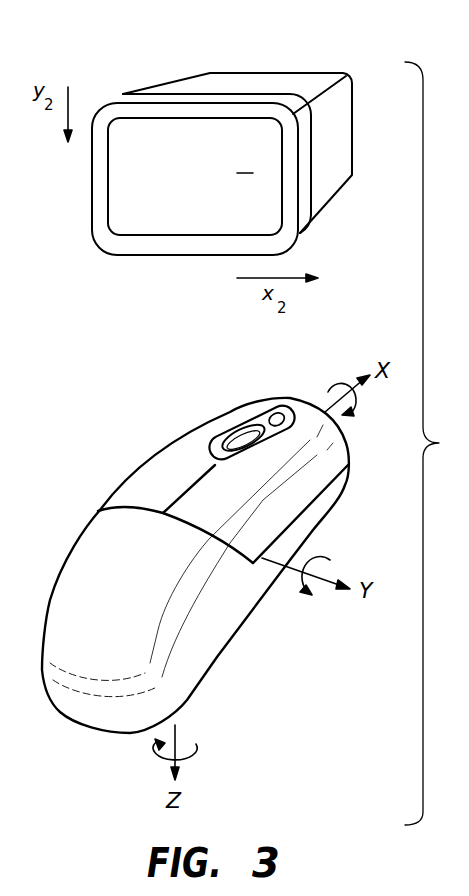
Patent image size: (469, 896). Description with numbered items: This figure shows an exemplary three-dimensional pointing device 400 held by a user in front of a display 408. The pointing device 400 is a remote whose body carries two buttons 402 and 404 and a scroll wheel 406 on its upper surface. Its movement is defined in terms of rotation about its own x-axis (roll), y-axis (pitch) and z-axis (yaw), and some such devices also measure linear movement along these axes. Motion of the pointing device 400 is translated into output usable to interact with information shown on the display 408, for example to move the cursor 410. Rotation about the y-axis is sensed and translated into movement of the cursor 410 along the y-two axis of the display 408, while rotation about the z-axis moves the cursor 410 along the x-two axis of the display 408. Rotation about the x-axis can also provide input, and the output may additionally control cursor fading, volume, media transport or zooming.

The 3D pointing device 400 is at (117, 428).
The button 402 is at (160, 478).
The button 404 is at (312, 480).
The scroll wheel 406 is at (250, 438).
The display 408 is at (298, 155).
The cursor 410 is at (245, 175).